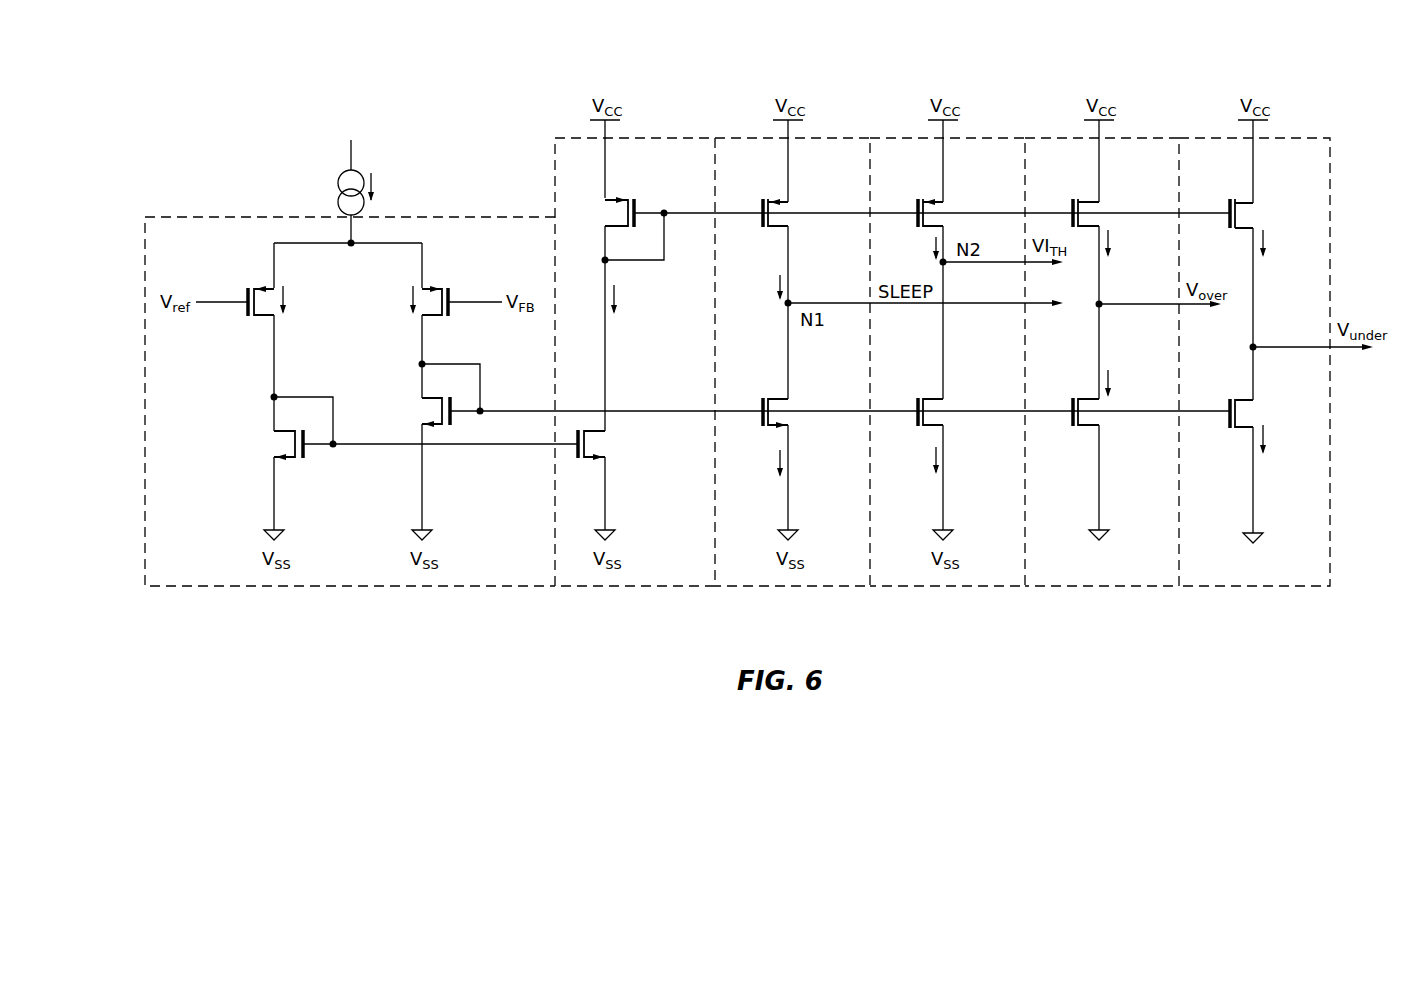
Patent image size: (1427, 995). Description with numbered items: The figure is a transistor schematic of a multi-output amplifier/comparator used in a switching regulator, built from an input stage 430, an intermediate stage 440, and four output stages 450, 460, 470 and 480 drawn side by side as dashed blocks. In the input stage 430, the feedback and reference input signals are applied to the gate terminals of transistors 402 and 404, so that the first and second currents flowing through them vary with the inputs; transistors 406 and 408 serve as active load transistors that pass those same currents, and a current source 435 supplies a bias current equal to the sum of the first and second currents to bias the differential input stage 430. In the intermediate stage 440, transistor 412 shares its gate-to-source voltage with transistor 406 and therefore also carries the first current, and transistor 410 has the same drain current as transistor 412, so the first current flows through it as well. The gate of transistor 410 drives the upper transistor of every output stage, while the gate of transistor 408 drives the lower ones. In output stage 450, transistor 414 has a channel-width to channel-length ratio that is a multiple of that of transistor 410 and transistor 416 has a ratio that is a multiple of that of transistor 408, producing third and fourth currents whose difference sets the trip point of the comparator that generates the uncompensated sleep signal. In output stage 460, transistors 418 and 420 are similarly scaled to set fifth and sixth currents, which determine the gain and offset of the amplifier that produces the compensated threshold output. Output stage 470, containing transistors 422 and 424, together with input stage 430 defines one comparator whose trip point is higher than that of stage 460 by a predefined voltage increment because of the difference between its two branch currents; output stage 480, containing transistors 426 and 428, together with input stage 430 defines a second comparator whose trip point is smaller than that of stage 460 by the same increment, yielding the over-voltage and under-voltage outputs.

The transistor 402 is at (262, 318).
The transistor 404 is at (432, 290).
The active load transistor 406 is at (287, 440).
The active load transistor 408 is at (433, 408).
The transistor 410 is at (618, 213).
The transistor 412 is at (596, 446).
The transistor 414 is at (776, 198).
The transistor 416 is at (776, 396).
The transistor 418 is at (932, 198).
The transistor 420 is at (932, 396).
The transistor 422 is at (1087, 198).
The transistor 424 is at (1087, 396).
The transistor 426 is at (1242, 199).
The transistor 428 is at (1242, 398).
The current source 435 is at (338, 181).
The input stage 430 is at (362, 588).
The intermediate stage 440 is at (632, 588).
The output stage 450 is at (787, 588).
The output stage 460 is at (943, 588).
The output stage 470 is at (1099, 588).
The output stage 480 is at (1253, 588).